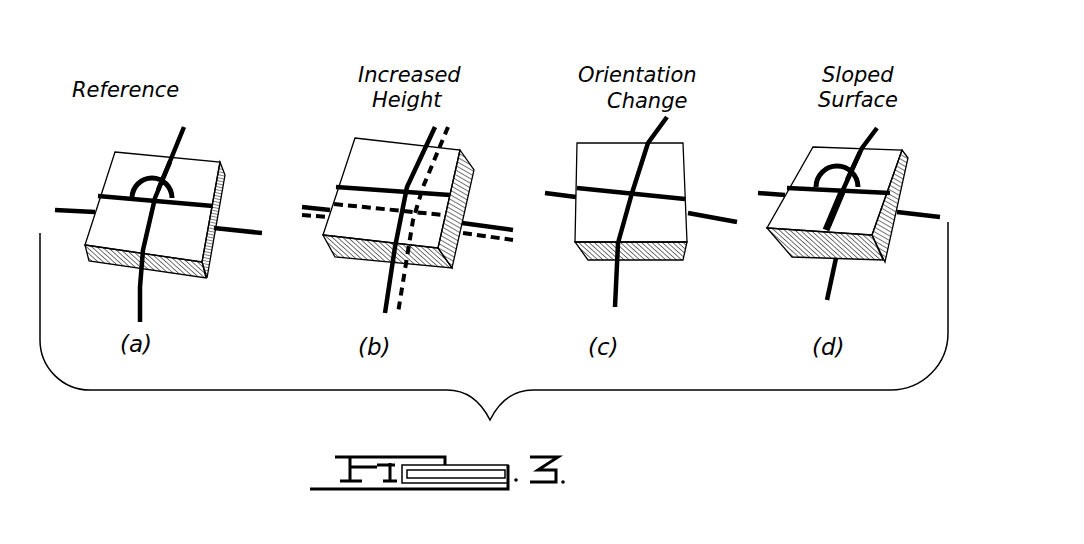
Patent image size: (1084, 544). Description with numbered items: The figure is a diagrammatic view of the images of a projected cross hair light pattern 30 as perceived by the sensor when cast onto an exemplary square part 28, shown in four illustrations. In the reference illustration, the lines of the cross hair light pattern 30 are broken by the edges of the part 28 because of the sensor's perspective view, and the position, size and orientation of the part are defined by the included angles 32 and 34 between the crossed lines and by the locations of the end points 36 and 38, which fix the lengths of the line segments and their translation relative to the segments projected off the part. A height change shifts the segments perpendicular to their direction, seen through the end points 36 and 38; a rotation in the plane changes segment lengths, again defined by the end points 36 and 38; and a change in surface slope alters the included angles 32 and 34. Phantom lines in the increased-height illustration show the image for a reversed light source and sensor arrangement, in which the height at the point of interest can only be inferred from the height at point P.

The part 28 is at (197, 277).
The cross hair light pattern 30 is at (140, 227).
The included angle 32 is at (170, 194).
The included angle 34 is at (140, 178).
The end point 36 is at (103, 196).
The end point 38 is at (176, 150).
The point P is at (414, 215).